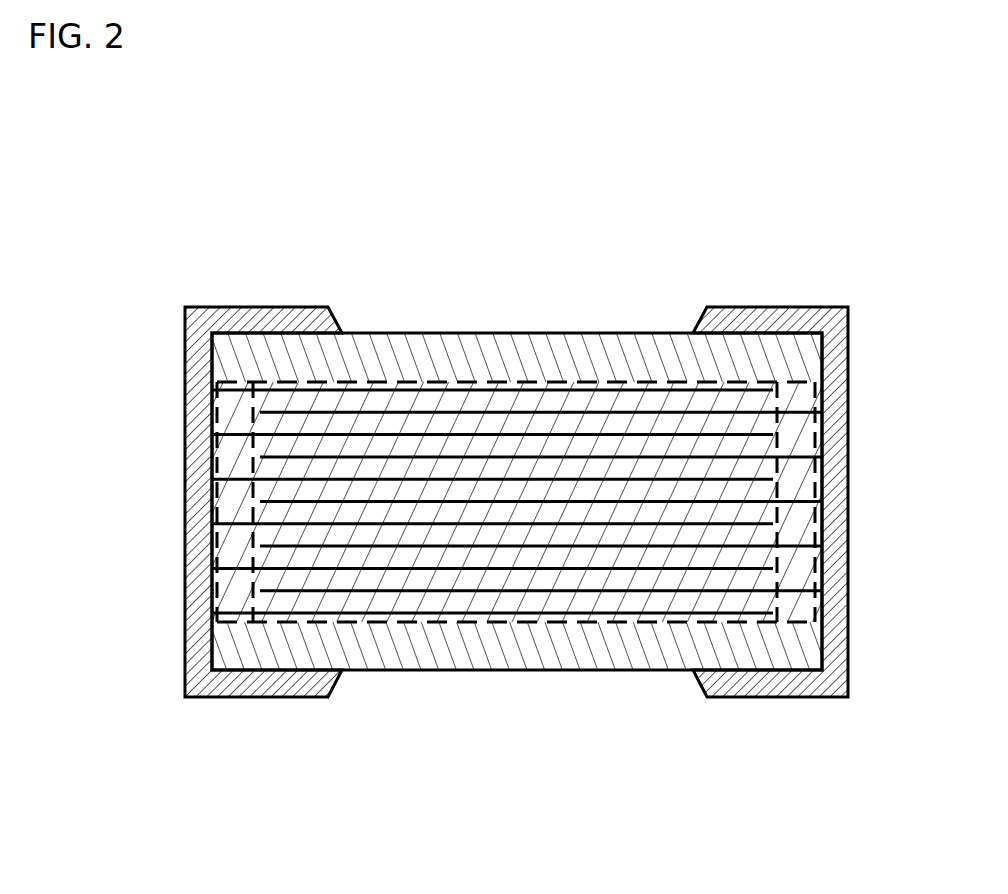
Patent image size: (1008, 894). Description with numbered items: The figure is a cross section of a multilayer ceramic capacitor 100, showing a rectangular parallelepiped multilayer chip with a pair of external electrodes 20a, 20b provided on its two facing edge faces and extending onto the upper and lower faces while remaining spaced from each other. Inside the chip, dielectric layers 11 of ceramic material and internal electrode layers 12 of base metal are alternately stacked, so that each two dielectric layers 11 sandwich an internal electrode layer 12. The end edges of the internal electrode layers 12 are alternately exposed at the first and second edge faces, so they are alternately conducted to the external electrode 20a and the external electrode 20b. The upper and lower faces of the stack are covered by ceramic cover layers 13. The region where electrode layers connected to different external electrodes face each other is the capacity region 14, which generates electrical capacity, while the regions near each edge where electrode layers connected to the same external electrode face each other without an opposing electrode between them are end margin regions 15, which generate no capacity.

The multilayer ceramic capacitor 100 is at (510, 447).
The dielectric layer 11 is at (640, 578).
The internal electrode layer 12 is at (508, 548).
The cover layer 13 is at (410, 348).
The capacity region 14 is at (540, 381).
The end margin region 15 is at (238, 381).
The external electrode 20a is at (210, 307).
The external electrode 20b is at (812, 307).